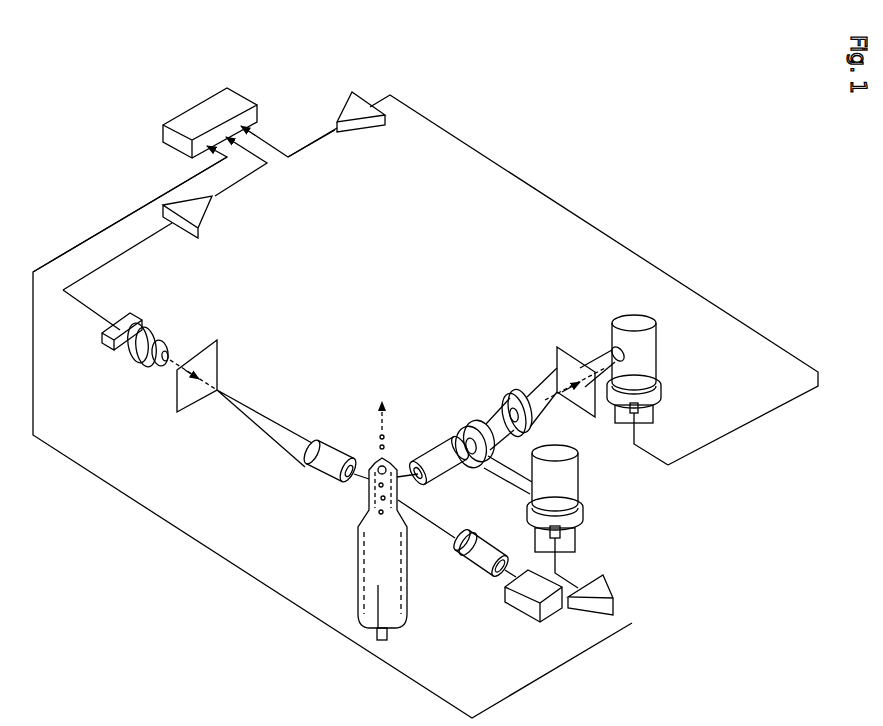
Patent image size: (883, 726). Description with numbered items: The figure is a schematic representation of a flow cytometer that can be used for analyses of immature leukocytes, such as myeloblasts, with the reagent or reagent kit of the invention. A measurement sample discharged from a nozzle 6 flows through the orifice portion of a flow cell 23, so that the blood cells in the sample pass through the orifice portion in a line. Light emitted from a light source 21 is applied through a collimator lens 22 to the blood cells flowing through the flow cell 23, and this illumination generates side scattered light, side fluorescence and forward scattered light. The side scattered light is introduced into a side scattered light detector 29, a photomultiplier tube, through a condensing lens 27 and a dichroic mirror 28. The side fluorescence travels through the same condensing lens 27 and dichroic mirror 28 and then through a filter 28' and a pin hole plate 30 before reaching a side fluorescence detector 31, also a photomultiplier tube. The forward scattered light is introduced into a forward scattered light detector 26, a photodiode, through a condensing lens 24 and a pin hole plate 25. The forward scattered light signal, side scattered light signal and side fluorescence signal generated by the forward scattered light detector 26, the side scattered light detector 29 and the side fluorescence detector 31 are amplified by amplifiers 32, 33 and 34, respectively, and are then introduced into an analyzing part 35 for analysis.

The nozzle 6 is at (392, 635).
The light source 21 is at (522, 605).
The collimator lens 22 is at (485, 552).
The flow cell 23 is at (342, 533).
The condensing lens 24 is at (330, 452).
The pin hole plate 25 is at (208, 360).
The forward scattered light detector 26 is at (160, 333).
The condensing lens 27 is at (435, 453).
The dichroic mirror 28 is at (489, 433).
The filter 28' is at (526, 389).
The side scattered light detector 29 is at (572, 480).
The pin hole plate 30 is at (570, 338).
The side fluorescence detector 31 is at (648, 353).
The amplifier 32 is at (197, 210).
The amplifier 33 is at (600, 587).
The amplifier 34 is at (345, 108).
The analyzing part 35 is at (195, 120).